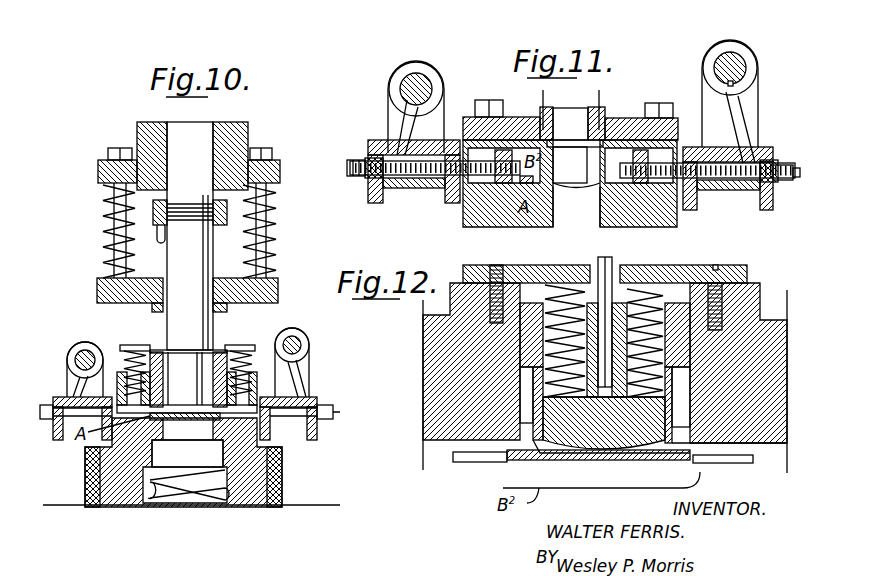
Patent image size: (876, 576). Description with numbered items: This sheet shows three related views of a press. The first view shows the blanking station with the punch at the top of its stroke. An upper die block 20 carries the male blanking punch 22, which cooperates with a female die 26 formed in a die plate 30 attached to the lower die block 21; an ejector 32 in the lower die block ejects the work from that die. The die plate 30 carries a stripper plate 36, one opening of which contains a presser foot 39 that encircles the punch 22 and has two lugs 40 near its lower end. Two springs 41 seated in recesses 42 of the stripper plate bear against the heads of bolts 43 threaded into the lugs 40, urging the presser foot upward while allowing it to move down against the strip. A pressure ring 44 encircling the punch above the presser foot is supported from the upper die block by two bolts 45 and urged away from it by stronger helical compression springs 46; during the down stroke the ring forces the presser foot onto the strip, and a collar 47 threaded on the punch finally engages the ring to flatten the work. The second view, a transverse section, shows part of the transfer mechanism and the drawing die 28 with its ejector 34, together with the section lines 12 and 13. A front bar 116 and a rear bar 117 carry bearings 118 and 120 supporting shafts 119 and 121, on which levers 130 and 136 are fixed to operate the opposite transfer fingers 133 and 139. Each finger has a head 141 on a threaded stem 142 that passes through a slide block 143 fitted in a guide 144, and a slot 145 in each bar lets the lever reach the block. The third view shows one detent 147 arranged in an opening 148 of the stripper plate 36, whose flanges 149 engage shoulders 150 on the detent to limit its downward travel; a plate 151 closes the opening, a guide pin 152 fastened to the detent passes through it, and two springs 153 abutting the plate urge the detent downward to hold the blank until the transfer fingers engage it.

In FIG. 11, the section line 12— 12 is at (585, 84).
In FIG. 11, the section line 13— 13 is at (730, 20).
In FIG. 10, the upper die block 20 is at (137, 122).
In FIG. 10, the lower die block 21 is at (85, 490).
In FIG. 10, the male blanking die or punch 22 is at (190, 236).
In FIG. 10, the female die 26 is at (160, 423).
In FIG. 11, the female die 28 is at (587, 233).
In FIG. 10, the die plate 30 is at (85, 456).
In FIG. 11, the die plate 30 is at (522, 229).
In FIG. 10, the ejector 32 is at (187, 453).
In FIG. 11, the ejector 34 is at (565, 229).
In FIG. 10, the stripper plate 36 is at (256, 396).
In FIG. 12, the stripper plate 36 is at (423, 328).
In FIG. 10, the presser foot 39 is at (158, 347).
In FIG. 10, the lug 40 is at (172, 400).
In FIG. 10, the spring 41 is at (164, 365).
In FIG. 10, the recess 42 is at (164, 384).
In FIG. 10, the bolt 43 is at (131, 349).
In FIG. 10, the pressure ring 44 is at (165, 297).
In FIG. 10, the bolt 45 is at (108, 153).
In FIG. 10, the helical compression spring 46 is at (103, 216).
In FIG. 10, the collar 47 is at (163, 241).
In FIG. 10, the front bar 116 is at (53, 401).
In FIG. 11, the front bar 116 is at (379, 140).
In FIG. 10, the rear bar 117 is at (312, 425).
In FIG. 11, the rear bar 117 is at (760, 148).
In FIG. 10, the bearing 118 is at (85, 342).
In FIG. 11, the bearing 118 is at (412, 56).
In FIG. 10, the shaft 119 is at (75, 360).
In FIG. 11, the shaft 119 is at (400, 82).
In FIG. 10, the bearing 120 is at (302, 338).
In FIG. 11, the bearing 120 is at (756, 58).
In FIG. 10, the shaft 121 is at (302, 349).
In FIG. 11, the shaft 121 is at (746, 68).
In FIG. 10, the lever 130 is at (75, 383).
In FIG. 11, the lever 130 is at (407, 125).
In FIG. 10, the transfer finger 133 is at (45, 419).
In FIG. 11, the transfer finger 133 is at (347, 168).
In FIG. 10, the lever 136 is at (300, 381).
In FIG. 11, the lever 136 is at (738, 100).
In FIG. 10, the transfer finger 139 is at (328, 419).
In FIG. 11, the transfer finger 139 is at (793, 172).
In FIG. 11, the head 141 is at (510, 182).
In FIG. 11, the stem 142 is at (430, 189).
In FIG. 11, the slide block 143 is at (363, 179).
In FIG. 11, the guide 144 is at (400, 188).
In FIG. 11, the slot 145 is at (437, 147).
In FIG. 12, the detent 147 is at (605, 462).
In FIG. 12, the opening 148 is at (690, 393).
In FIG. 12, the flange 149 is at (495, 463).
In FIG. 12, the shoulder 150 is at (520, 368).
In FIG. 12, the plate 151 is at (748, 276).
In FIG. 12, the guide pin 152 is at (613, 262).
In FIG. 12, the spring 153 is at (575, 403).